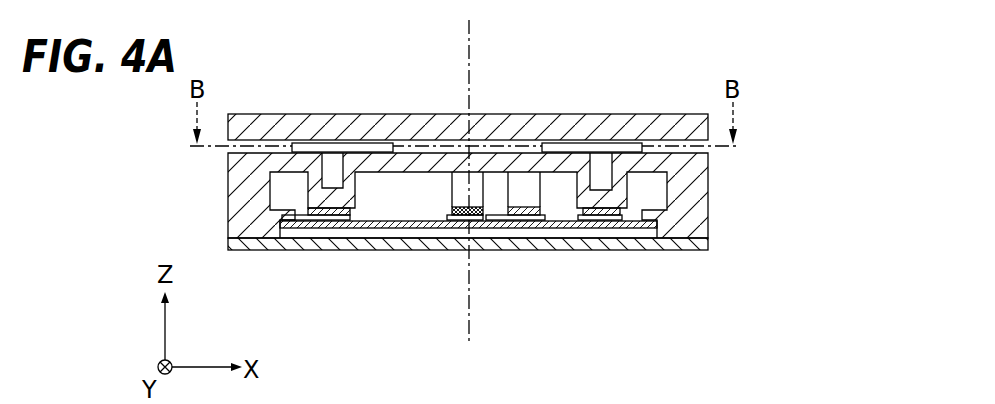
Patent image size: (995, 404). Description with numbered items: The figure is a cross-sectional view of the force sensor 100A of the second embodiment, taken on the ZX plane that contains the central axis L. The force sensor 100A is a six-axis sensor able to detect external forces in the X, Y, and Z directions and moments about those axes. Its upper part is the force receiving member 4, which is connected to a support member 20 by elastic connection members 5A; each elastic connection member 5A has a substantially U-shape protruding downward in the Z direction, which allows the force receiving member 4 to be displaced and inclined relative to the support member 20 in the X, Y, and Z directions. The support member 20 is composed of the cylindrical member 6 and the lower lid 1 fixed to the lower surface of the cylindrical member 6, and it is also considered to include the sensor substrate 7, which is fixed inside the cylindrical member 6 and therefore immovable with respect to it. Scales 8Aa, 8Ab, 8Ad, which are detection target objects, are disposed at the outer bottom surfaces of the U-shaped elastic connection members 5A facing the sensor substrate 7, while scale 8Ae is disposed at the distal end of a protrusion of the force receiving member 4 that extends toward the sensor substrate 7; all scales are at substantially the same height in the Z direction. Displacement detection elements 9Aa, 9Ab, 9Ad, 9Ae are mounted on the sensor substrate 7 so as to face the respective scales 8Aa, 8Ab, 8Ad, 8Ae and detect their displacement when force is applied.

The force sensor 100A is at (652, 20).
The force receiving member 4 is at (538, 133).
The elastic connection member 5A is at (288, 165).
The cylindrical member 6 is at (690, 226).
The sensor substrate 7 is at (638, 234).
The lower lid 1 is at (620, 226).
The support member 20 is at (480, 263).
The scale 8Ad is at (298, 221).
The scale 8Aa is at (448, 216).
The scale 8Ae is at (502, 218).
The scale 8Ab is at (572, 220).
The displacement detection element 9Ad is at (335, 213).
The displacement detection element 9Aa is at (457, 214).
The displacement detection element 9Ae is at (532, 214).
The displacement detection element 9Ab is at (607, 214).
The central axis L is at (479, 30).